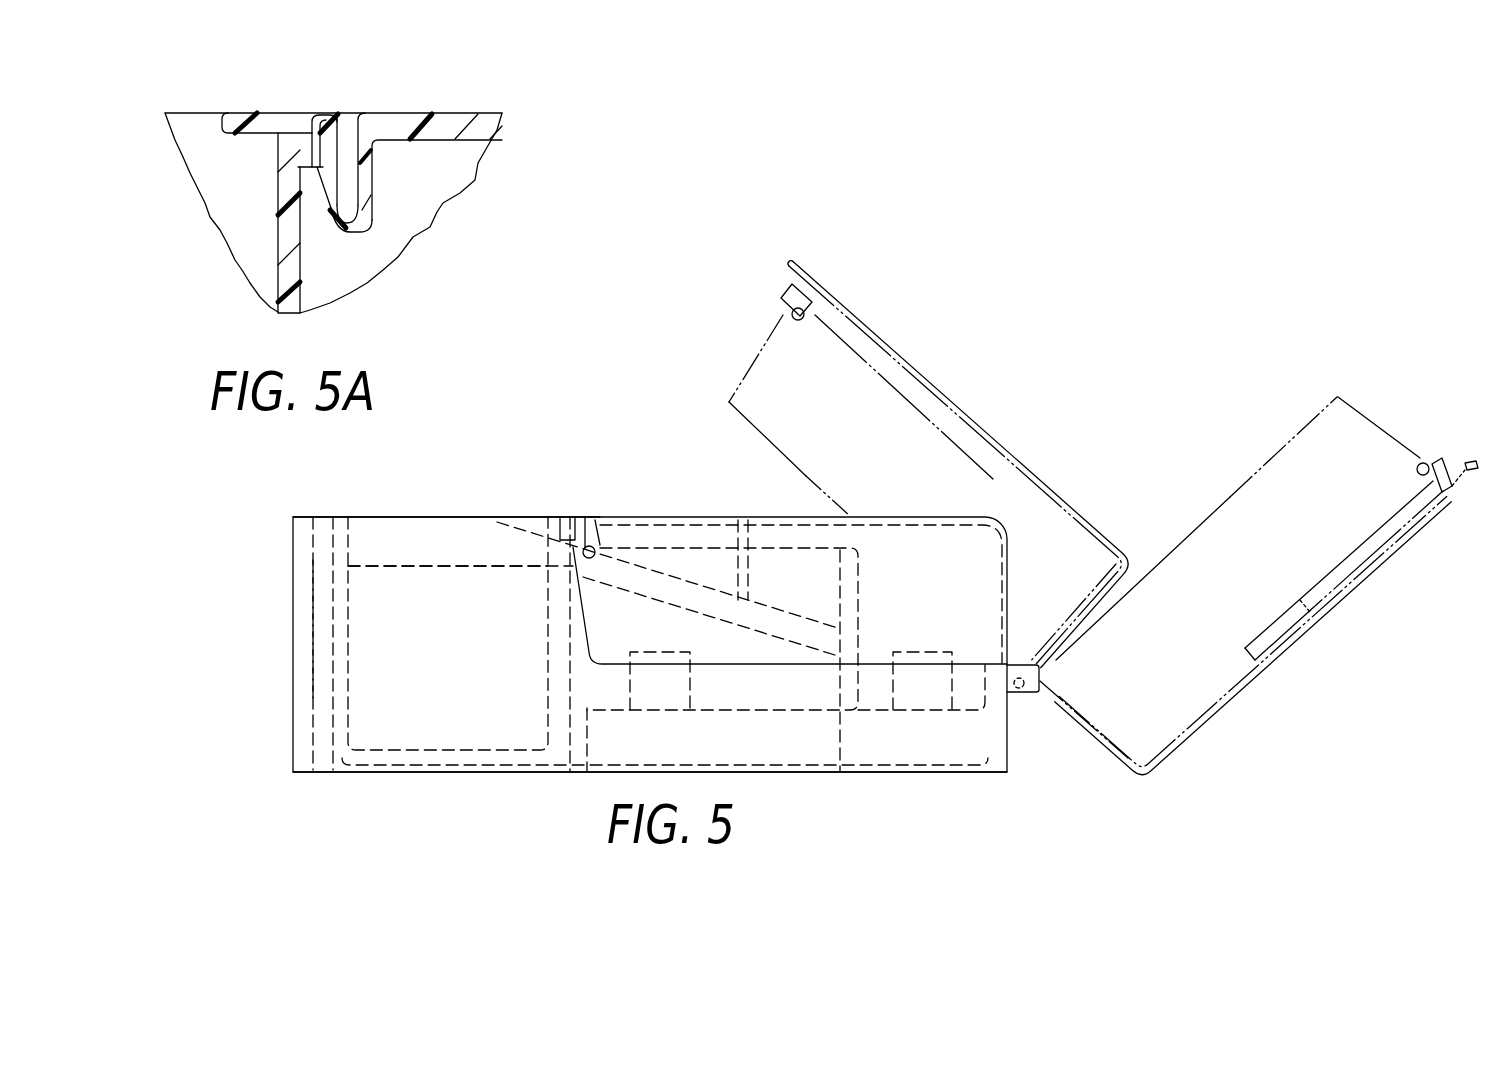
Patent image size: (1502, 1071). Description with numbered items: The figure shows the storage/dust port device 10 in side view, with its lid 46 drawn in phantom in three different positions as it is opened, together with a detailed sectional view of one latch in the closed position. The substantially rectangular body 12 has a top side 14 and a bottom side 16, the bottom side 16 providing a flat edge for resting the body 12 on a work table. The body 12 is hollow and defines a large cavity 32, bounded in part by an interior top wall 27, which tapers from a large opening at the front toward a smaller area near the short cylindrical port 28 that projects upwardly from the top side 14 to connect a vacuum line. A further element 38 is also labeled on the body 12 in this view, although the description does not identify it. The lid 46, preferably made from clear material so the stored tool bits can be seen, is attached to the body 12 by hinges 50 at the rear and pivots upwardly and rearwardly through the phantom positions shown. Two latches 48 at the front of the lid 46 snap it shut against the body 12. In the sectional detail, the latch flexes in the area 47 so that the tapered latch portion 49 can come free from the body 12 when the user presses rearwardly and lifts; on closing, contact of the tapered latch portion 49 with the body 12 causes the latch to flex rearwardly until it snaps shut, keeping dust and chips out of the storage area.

In FIG. 5, the storage/dust port device 10 is at (952, 226).
In FIG. 5A, the body 12 is at (280, 240).
In FIG. 5, the body 12 is at (975, 777).
In FIG. 5, the top side 14 is at (435, 515).
In FIG. 5, the bottom side 16 is at (553, 775).
In FIG. 5, the interior top wall 27 is at (621, 600).
In FIG. 5, the port 28 is at (733, 568).
In FIG. 5, the cavity 32 is at (383, 581).
In FIG. 5, the side wall 38 is at (313, 693).
In FIG. 5A, the lid 46 is at (472, 120).
In FIG. 5, the lid 46 is at (776, 514).
In FIG. 5A, the area 47 is at (355, 224).
In FIG. 5A, the latches 48 is at (275, 118).
In FIG. 5, the latches 48 is at (545, 518).
In FIG. 5A, the latch portion 49 is at (313, 125).
In FIG. 5, the hinges 50 is at (1024, 694).